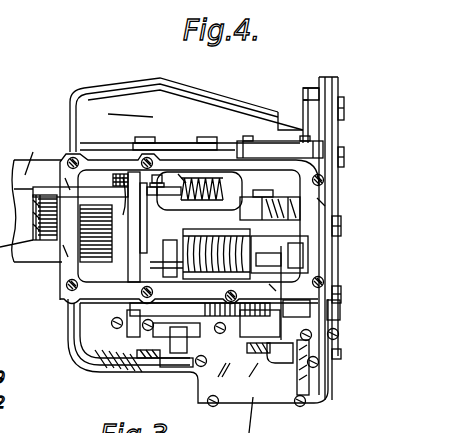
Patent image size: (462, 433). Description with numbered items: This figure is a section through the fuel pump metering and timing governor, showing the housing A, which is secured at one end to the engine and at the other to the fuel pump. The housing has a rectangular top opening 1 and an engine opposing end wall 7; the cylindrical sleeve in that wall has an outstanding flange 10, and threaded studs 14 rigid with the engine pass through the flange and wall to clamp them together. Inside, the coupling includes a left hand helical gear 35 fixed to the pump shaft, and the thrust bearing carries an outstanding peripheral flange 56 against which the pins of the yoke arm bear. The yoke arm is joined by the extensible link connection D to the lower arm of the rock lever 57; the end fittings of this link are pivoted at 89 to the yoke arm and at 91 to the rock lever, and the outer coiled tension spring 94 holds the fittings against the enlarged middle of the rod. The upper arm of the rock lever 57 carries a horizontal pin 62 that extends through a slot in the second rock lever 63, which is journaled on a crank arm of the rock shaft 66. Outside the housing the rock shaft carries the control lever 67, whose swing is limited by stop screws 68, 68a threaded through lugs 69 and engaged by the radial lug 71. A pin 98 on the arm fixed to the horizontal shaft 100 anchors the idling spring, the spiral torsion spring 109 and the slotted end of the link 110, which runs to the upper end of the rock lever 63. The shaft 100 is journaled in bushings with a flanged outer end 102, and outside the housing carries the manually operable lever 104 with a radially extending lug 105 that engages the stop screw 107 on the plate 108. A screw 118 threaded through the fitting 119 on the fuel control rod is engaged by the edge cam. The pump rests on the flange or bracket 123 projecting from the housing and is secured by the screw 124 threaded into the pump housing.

The housing A is at (124, 96).
The extensible link connection D is at (256, 165).
The top opening 1 is at (90, 295).
The engine opposing end wall 7 is at (317, 98).
The outstanding flange 10 is at (336, 98).
The threaded studs 14 is at (331, 60).
The left hand helical gear 35 is at (100, 272).
The outstanding peripheral flange 56 is at (68, 316).
The rock lever 57 is at (282, 338).
The horizontal pin 62 is at (283, 228).
The second rock lever 63 is at (231, 213).
The rock shaft 66 is at (307, 357).
The control lever 67 is at (265, 343).
The stop screw 68 is at (240, 337).
The stop screw 68a is at (324, 395).
The lugs 69 is at (240, 367).
The radial lug 71 is at (240, 337).
The pivot 89 is at (130, 304).
The pivot 91 is at (187, 177).
The outer coiled tension spring 94 is at (163, 262).
The pin 98 is at (160, 178).
The horizontal shaft 100 is at (177, 373).
The flanged outer end 102 is at (220, 415).
The manually operable lever 104 is at (158, 360).
The radially extending lug 105 is at (152, 362).
The stop screw 107 is at (125, 326).
The plate 108 is at (136, 338).
The spiral torsion spring 109 is at (160, 226).
The link 110 is at (143, 172).
The screw 118 is at (107, 182).
The fitting 119 is at (123, 177).
The flange or bracket 123 is at (33, 155).
The screw 124 is at (50, 248).